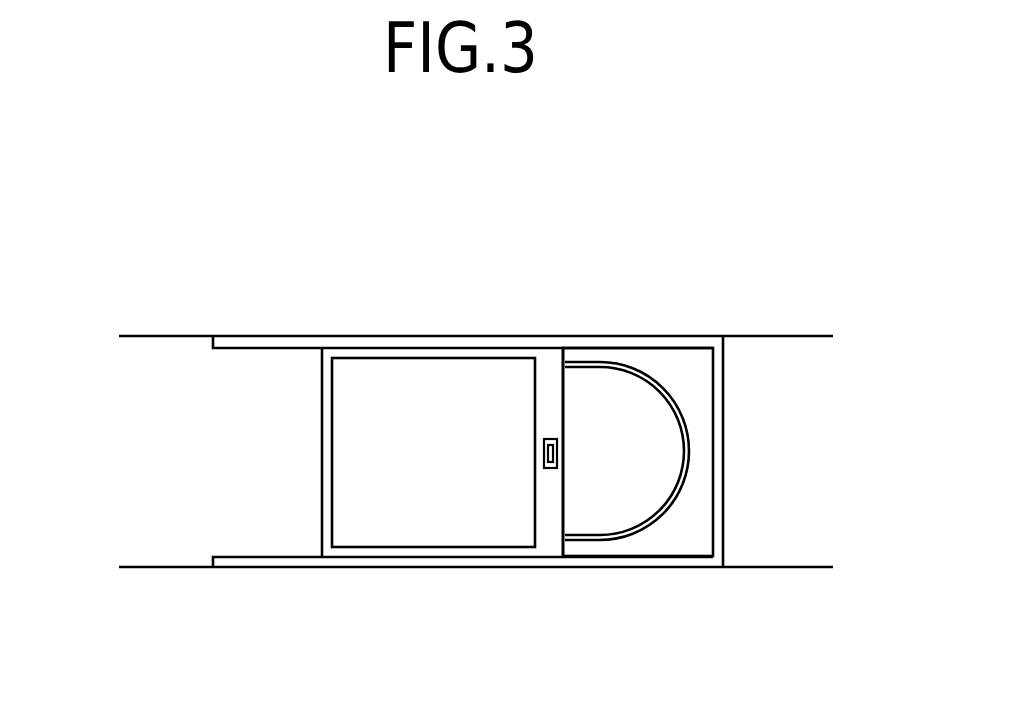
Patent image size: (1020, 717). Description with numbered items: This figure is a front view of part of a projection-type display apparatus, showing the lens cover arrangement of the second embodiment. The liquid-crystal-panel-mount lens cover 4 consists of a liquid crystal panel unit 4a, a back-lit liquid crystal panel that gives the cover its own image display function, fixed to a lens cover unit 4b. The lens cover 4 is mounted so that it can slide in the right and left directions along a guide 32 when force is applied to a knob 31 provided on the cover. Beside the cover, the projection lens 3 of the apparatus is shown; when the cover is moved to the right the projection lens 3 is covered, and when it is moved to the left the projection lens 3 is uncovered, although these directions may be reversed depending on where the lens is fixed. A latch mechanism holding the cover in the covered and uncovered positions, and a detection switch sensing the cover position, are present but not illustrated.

The projection lens 3 is at (642, 440).
The lens cover 4 is at (337, 512).
The liquid crystal panel unit 4a is at (410, 500).
The lens cover unit 4b is at (321, 477).
The knob 31 is at (544, 455).
The guide 32 is at (252, 349).